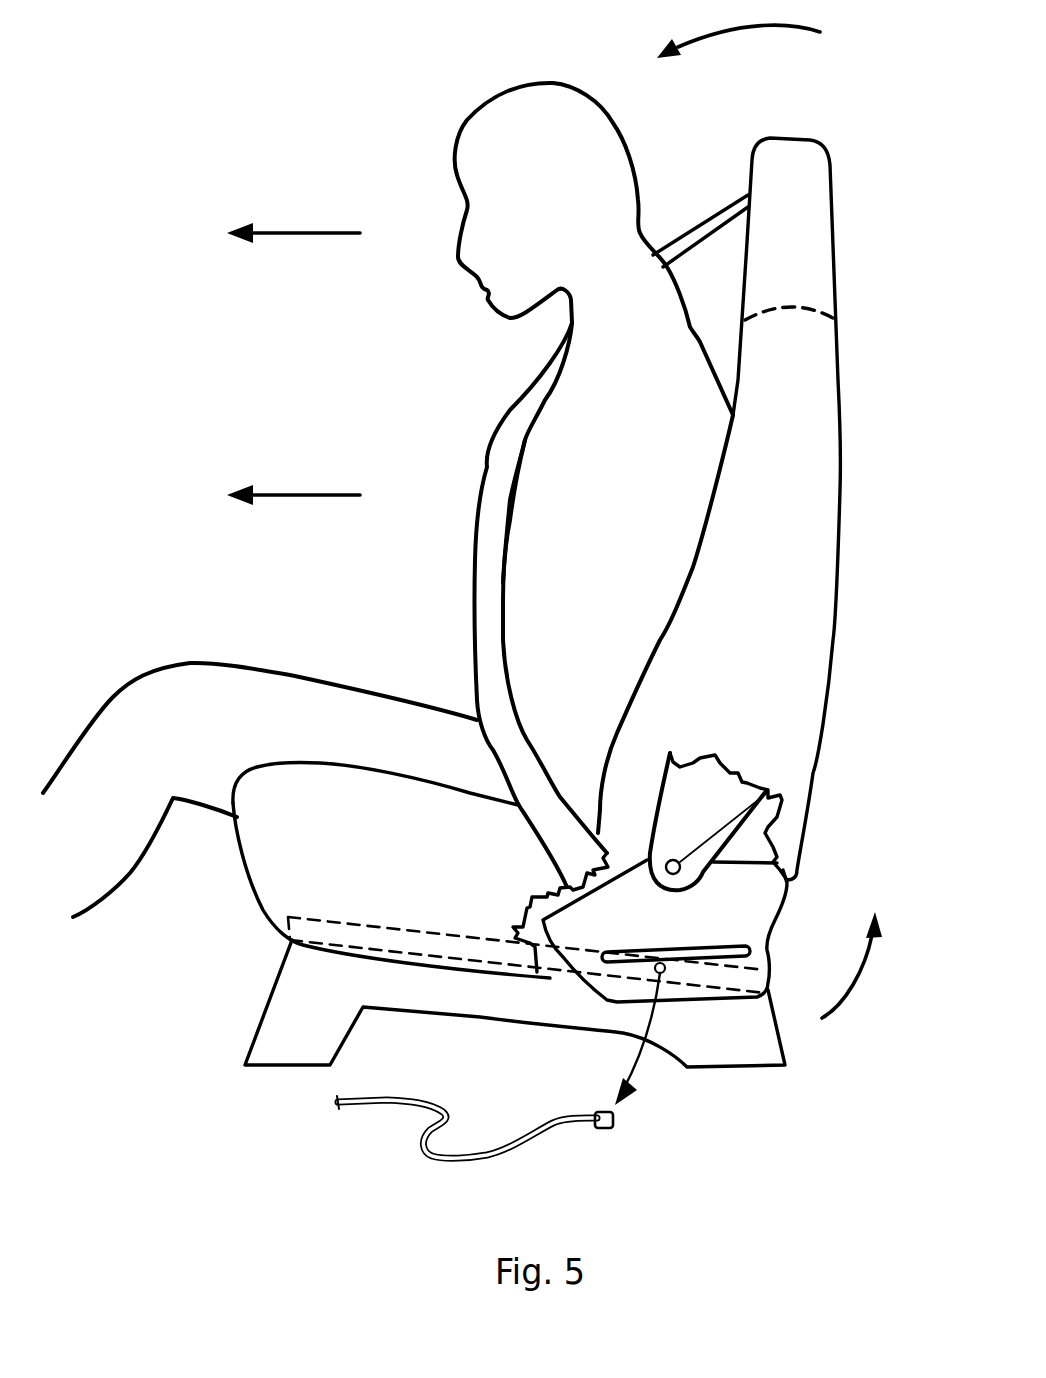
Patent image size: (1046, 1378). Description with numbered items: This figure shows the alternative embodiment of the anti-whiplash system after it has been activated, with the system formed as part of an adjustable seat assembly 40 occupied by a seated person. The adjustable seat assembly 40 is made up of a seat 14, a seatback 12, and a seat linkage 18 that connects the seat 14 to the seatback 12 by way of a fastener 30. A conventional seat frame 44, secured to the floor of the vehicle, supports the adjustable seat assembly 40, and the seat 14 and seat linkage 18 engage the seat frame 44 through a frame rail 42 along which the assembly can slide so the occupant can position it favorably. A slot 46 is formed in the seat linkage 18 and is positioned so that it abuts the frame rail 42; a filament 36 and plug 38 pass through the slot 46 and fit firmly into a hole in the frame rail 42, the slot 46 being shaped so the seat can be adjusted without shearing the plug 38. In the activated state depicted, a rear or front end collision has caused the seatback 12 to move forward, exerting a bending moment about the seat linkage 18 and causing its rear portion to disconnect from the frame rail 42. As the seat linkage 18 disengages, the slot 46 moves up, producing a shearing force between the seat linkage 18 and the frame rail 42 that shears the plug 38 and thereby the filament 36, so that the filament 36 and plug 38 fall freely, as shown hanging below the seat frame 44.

The seatback 12 is at (807, 460).
The seat 14 is at (270, 868).
The seat linkage 18 is at (753, 880).
The fastener 30 is at (690, 870).
The filament 36 is at (423, 1147).
The plug 38 is at (600, 1130).
The adjustable seat assembly 40 is at (337, 400).
The frame rail 42 is at (770, 990).
The seat frame 44 is at (280, 1018).
The slot 46 is at (763, 952).